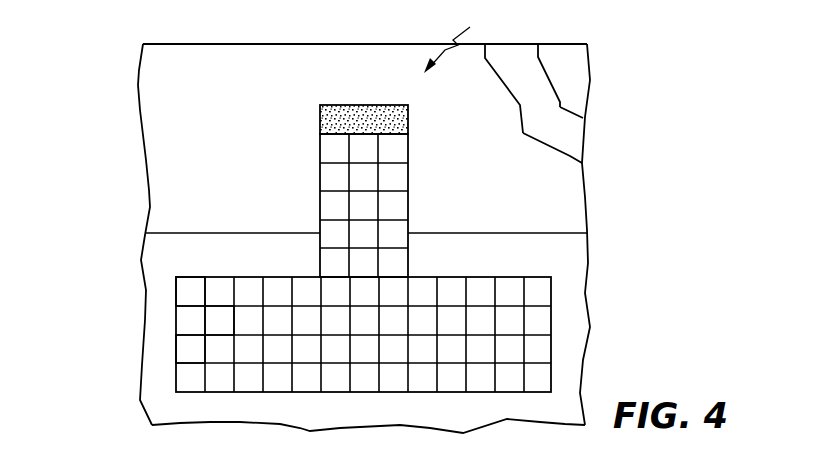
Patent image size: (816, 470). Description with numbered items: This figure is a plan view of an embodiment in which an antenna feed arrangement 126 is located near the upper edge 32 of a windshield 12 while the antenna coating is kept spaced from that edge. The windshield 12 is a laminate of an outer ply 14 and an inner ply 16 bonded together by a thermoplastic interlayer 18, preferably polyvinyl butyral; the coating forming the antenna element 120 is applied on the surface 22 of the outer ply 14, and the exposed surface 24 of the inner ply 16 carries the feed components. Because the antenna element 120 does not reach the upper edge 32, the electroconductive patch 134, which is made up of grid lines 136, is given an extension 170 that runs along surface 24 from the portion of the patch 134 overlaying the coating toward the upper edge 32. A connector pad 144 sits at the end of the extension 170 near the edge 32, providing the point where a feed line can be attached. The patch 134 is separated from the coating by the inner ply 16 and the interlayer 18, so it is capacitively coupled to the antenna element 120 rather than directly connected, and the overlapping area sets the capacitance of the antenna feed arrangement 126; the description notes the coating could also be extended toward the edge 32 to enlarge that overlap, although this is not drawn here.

The windshield 12 is at (140, 112).
The upper edge 32 is at (183, 44).
The surface 24 is at (545, 185).
The outer glass ply 14 is at (590, 80).
The inner glass ply 16 is at (565, 150).
The surface 22 is at (557, 51).
The thermoplastic interlayer 18 is at (560, 100).
The antenna element 120 is at (168, 232).
The antenna feed arrangement 126 is at (461, 36).
The connector pad 144 is at (345, 105).
The extension 170 is at (320, 178).
The patch 134 is at (551, 347).
The grid lines 136 is at (193, 359).